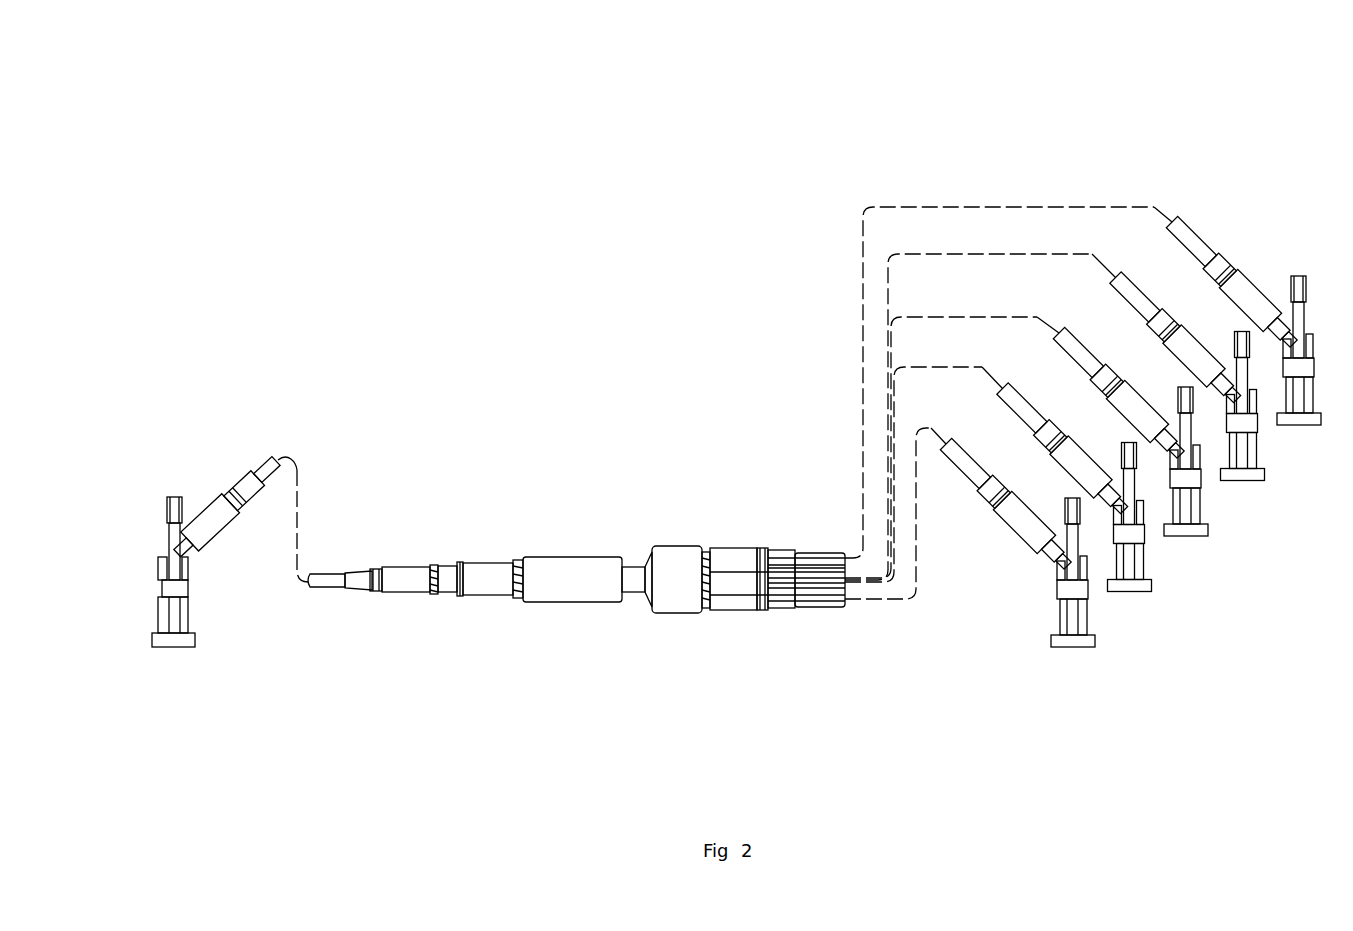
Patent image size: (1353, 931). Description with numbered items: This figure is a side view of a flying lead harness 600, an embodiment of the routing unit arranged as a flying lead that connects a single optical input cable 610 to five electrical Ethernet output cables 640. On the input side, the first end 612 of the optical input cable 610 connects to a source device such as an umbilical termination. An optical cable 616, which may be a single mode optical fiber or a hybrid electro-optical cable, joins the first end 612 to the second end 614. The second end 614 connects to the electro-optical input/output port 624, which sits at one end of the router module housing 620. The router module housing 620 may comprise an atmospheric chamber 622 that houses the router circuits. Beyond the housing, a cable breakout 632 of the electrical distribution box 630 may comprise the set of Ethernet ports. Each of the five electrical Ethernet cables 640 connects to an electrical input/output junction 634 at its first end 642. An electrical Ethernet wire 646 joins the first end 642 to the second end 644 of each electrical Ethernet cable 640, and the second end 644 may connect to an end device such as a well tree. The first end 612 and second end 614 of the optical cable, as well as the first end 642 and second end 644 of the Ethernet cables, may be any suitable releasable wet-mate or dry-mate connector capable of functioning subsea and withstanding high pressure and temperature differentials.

The flying lead harness 600 is at (520, 212).
The optical input cable 610 is at (207, 450).
The first end of the optical input cable 612 is at (210, 553).
The second end of the optical input cable 614 is at (400, 583).
The optical cable 616 is at (292, 465).
The router module housing 620 is at (490, 448).
The atmospheric chamber 622 is at (572, 583).
The electro-optical input/output port 624 is at (438, 565).
The electrical distribution box 630 is at (731, 447).
The cable breakout 632 is at (680, 609).
The electrical input/output junction 634 is at (708, 607).
The electrical Ethernet output cable 640 is at (1205, 192).
The first end of the electrical Ethernet cable 642 is at (728, 607).
The second end of the electrical Ethernet cable 644 is at (1080, 607).
The electrical Ethernet wire 646 is at (913, 208).